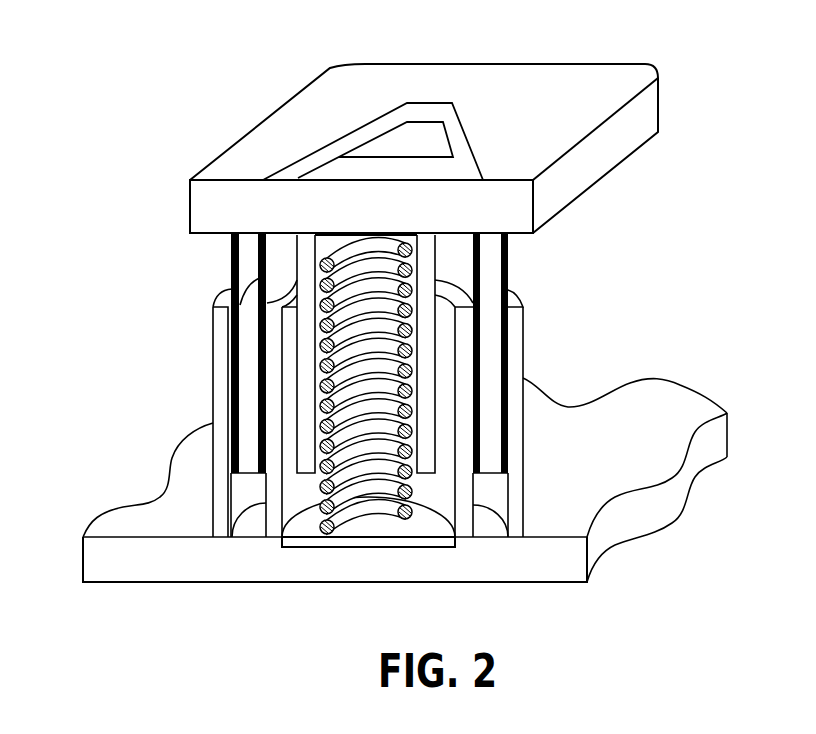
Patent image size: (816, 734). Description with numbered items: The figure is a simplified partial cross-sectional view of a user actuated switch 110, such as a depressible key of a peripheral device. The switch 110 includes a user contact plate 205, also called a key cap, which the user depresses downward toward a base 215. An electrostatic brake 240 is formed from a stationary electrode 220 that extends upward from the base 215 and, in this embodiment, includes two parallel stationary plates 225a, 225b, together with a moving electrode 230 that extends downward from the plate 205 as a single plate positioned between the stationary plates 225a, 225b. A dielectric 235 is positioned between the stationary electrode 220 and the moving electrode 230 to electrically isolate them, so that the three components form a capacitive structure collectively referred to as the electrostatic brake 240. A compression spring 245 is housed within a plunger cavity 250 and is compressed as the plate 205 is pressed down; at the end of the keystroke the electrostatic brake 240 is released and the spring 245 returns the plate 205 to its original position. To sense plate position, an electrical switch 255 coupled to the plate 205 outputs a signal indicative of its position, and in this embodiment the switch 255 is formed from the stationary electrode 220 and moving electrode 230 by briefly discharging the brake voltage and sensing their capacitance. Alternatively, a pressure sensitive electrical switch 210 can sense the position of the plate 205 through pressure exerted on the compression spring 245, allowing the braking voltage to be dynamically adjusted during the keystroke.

The user actuated switch 110 is at (151, 66).
The user contact plate 205 is at (648, 112).
The pressure sensitive electrical switch 210 is at (298, 542).
The base 215 is at (652, 505).
The stationary electrode 220 is at (517, 328).
The stationary plate 225a is at (273, 320).
The stationary plate 225b is at (213, 328).
The moving electrode 230 is at (488, 382).
The dielectric 235 is at (262, 370).
The electrostatic brake 240 is at (546, 290).
The compression spring 245 is at (368, 507).
The plunger cavity 250 is at (330, 247).
The electrical switch 255 is at (303, 453).